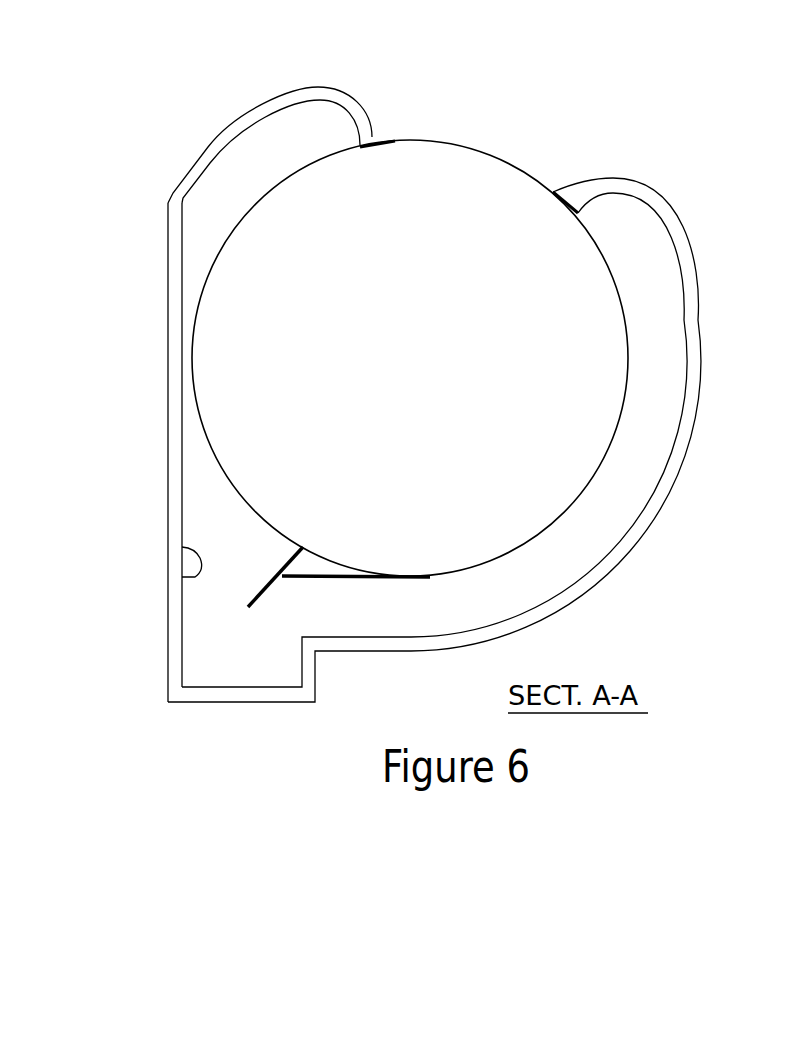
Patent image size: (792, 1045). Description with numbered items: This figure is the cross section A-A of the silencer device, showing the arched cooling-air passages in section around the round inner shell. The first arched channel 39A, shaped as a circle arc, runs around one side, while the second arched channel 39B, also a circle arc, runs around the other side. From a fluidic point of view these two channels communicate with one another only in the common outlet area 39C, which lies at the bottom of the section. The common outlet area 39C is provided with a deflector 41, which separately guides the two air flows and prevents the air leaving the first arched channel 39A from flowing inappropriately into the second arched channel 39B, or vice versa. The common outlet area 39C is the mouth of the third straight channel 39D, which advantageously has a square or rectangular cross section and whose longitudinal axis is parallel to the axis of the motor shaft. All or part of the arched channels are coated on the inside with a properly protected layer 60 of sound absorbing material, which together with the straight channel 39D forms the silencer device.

The first arched channel 39A is at (637, 480).
The second arched channel 39B is at (198, 472).
The common outlet area 39C is at (260, 612).
The third straight channel 39D is at (178, 645).
The deflector 41 is at (252, 600).
The layer of sound absorbing material 60 is at (182, 577).